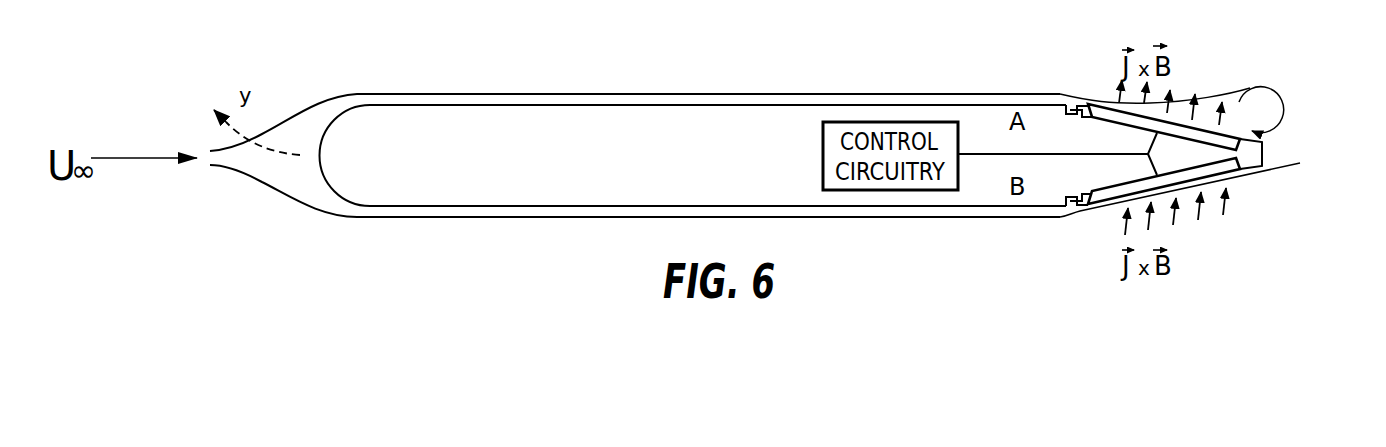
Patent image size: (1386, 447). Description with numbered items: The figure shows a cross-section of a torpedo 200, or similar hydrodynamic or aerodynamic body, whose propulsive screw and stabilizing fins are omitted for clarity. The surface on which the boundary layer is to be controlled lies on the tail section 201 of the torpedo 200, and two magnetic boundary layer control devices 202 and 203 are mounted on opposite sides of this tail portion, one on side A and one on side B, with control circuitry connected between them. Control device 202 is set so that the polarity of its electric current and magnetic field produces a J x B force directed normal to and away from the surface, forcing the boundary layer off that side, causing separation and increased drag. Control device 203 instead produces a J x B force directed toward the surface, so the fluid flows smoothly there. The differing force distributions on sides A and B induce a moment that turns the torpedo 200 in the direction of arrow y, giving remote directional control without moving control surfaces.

The torpedo 200 is at (480, 113).
The tail section 201 is at (1252, 148).
The boundary layer control device 202 is at (1081, 85).
The boundary layer control device 203 is at (1077, 219).